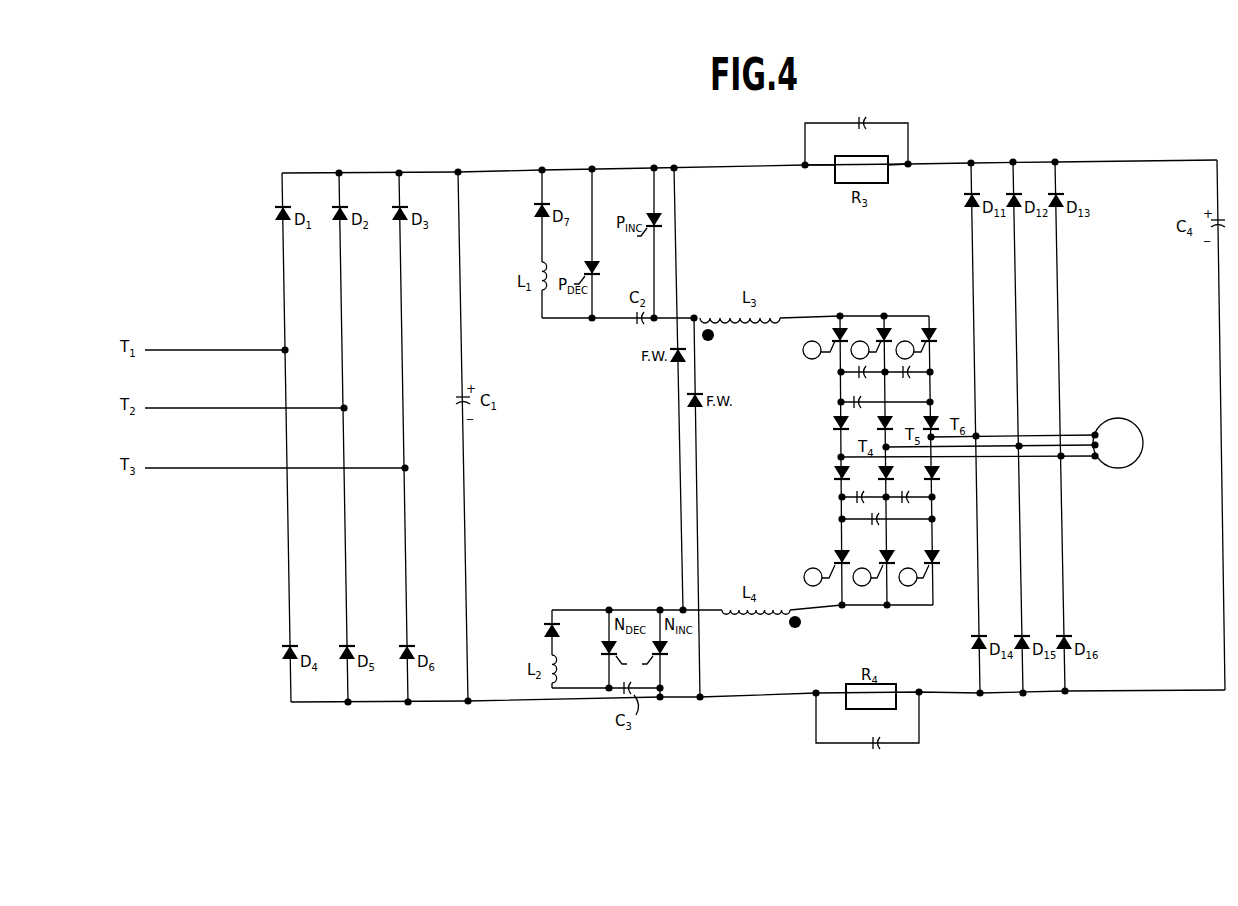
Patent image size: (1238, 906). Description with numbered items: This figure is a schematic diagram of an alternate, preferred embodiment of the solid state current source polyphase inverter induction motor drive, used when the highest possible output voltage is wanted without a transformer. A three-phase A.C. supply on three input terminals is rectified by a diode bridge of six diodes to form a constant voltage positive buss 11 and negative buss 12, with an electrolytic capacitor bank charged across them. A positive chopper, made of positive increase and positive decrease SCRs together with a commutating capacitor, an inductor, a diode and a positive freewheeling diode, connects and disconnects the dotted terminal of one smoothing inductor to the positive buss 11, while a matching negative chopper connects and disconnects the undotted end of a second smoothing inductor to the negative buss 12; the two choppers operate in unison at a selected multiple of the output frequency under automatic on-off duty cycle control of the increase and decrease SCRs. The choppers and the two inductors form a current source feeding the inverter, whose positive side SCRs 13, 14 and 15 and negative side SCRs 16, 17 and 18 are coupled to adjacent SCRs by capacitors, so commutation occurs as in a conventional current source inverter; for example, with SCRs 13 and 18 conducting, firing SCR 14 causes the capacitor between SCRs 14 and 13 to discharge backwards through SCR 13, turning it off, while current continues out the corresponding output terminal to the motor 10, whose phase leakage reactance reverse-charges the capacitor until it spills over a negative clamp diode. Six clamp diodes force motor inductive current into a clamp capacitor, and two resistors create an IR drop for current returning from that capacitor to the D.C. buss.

The motor 10 is at (1123, 420).
The positive buss 11 is at (499, 149).
The negative buss 12 is at (446, 702).
The inverter SCR 13 is at (834, 321).
The inverter SCR 14 is at (882, 321).
The inverter SCR 15 is at (933, 321).
The inverter SCR 16 is at (834, 552).
The inverter SCR 17 is at (882, 552).
The inverter SCR 18 is at (927, 552).